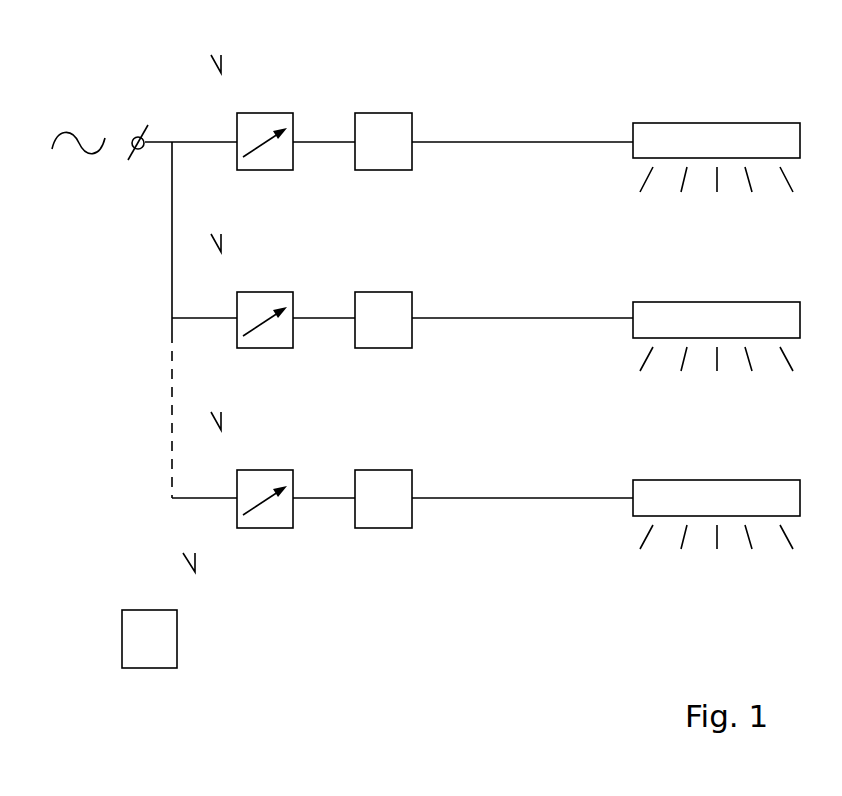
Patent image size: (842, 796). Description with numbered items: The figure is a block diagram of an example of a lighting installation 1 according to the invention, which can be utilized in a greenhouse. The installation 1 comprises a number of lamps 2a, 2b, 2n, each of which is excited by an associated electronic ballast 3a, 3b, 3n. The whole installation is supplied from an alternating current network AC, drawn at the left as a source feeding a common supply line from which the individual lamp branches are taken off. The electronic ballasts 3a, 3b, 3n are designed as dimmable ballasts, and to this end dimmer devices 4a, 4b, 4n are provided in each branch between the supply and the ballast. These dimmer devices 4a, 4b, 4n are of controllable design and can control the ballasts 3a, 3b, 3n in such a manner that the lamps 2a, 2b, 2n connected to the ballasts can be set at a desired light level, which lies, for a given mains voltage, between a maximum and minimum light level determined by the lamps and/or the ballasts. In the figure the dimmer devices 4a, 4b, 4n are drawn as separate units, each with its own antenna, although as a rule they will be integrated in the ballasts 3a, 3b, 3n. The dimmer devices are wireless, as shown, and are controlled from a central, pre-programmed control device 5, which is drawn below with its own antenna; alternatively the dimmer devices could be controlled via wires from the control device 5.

The lighting installation 1 is at (103, 57).
The alternating current network AC is at (100, 130).
The lamp 2a is at (661, 123).
The lamp 2b is at (661, 302).
The lamp 2n is at (661, 480).
The electronic ballast 3a is at (396, 113).
The electronic ballast 3b is at (396, 292).
The electronic ballast 3n is at (396, 470).
The dimmer device 4a is at (278, 113).
The dimmer device 4b is at (278, 292).
The dimmer device 4n is at (278, 470).
The central control device 5 is at (137, 610).